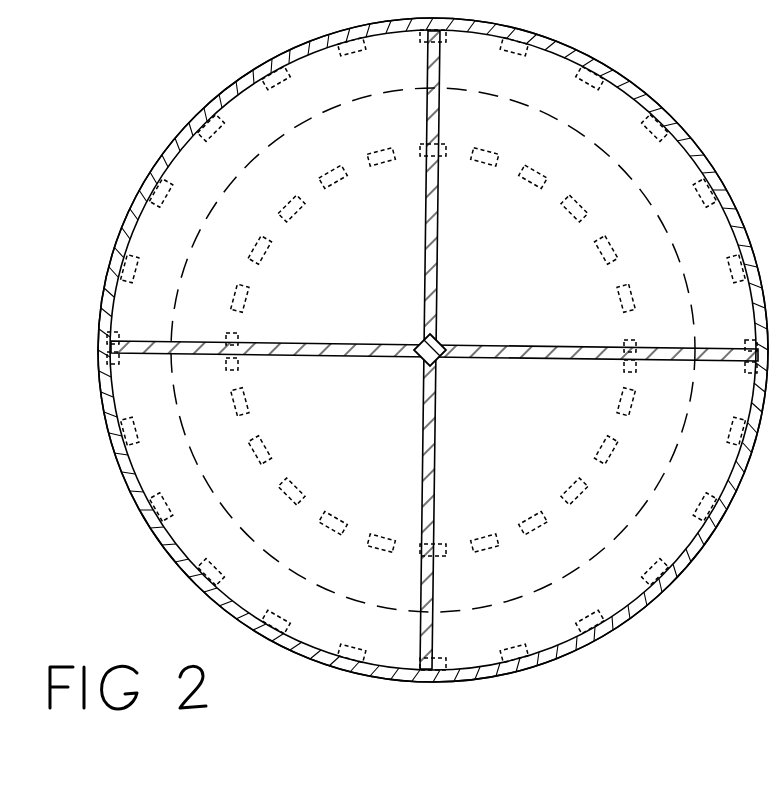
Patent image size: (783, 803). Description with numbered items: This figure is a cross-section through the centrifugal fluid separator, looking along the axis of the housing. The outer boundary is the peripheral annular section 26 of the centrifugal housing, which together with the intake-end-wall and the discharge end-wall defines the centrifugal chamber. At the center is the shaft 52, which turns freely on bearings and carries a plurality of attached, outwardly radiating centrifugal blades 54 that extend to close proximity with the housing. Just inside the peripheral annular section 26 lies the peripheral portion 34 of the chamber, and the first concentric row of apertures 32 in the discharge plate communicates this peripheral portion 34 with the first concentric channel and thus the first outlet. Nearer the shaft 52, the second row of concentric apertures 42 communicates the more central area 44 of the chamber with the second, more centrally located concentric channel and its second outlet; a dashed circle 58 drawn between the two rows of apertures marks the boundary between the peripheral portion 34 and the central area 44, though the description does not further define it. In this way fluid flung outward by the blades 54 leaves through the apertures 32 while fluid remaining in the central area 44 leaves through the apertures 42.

The peripheral annular section 26 is at (253, 78).
The first concentric row of apertures 32 is at (122, 445).
The peripheral portion 34 is at (432, 350).
The second row of concentric apertures 42 is at (240, 393).
The central area 44 is at (630, 381).
The shaft 52 is at (442, 345).
The centrifugal blades 54 is at (428, 281).
The tube circle 58 is at (377, 100).